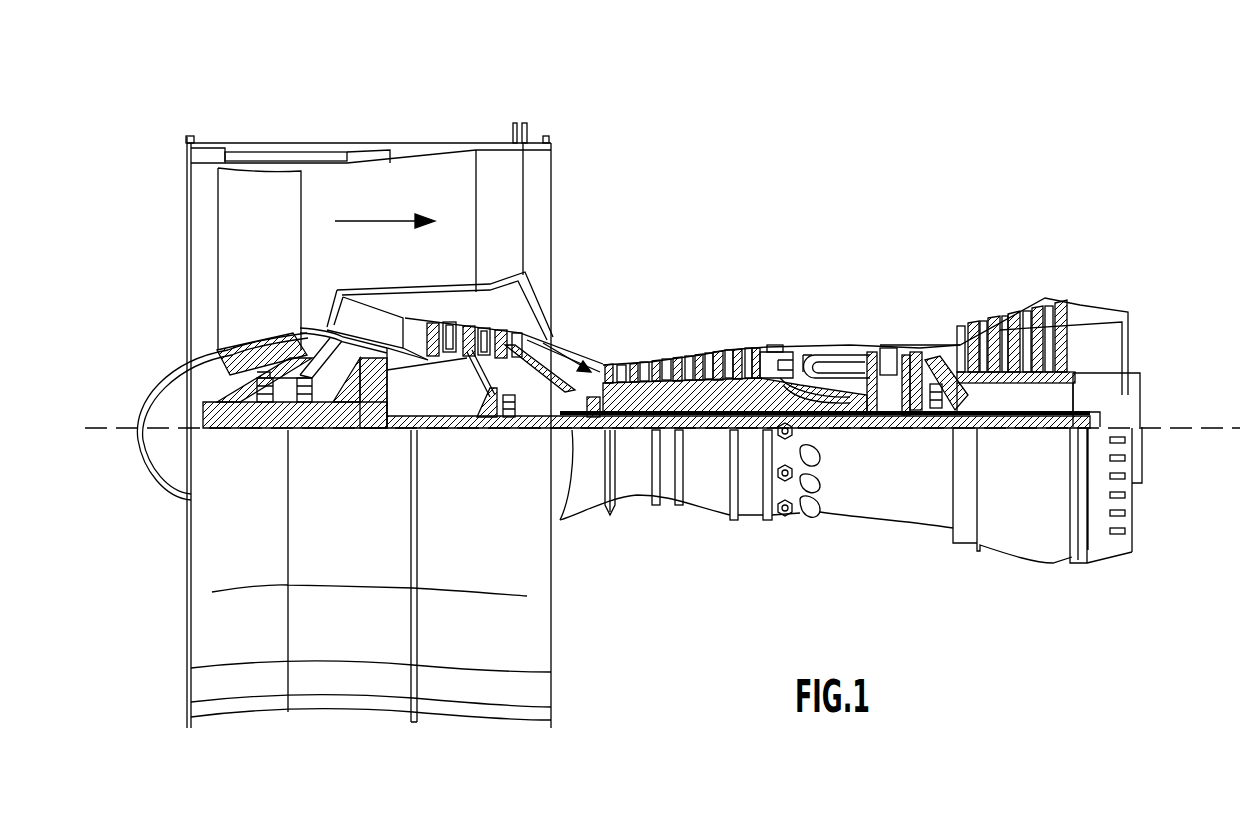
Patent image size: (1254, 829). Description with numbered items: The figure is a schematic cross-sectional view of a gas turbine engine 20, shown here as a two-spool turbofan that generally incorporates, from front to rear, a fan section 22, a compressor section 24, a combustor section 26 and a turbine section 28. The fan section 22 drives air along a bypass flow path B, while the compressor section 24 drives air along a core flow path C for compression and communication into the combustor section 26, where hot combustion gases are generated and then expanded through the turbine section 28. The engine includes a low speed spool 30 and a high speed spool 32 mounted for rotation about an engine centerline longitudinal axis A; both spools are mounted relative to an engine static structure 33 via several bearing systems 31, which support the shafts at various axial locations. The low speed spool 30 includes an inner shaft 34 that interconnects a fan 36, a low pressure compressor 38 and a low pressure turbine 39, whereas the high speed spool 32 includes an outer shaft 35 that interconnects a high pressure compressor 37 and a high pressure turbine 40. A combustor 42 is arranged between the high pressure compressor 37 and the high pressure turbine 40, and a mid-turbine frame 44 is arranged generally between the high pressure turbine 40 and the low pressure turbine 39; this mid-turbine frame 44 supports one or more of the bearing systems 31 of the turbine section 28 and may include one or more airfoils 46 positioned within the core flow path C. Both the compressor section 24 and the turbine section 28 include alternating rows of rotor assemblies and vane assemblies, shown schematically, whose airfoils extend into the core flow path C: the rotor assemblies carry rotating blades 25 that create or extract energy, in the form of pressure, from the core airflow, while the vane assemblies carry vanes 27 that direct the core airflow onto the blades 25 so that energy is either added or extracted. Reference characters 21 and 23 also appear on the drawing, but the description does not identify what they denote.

The gas turbine engine 20 is at (832, 192).
The rotor blades 21 is at (432, 326).
The fan section 22 is at (297, 130).
The vanes 23 is at (487, 326).
The compressor section 24 is at (605, 330).
The rotating blades 25 is at (490, 386).
The combustor section 26 is at (822, 324).
The vanes 27 is at (518, 336).
The turbine section 28 is at (970, 286).
The low speed spool 30 is at (709, 440).
The bearing systems 31 is at (274, 395).
The high speed spool 32 is at (754, 380).
The engine static structure 33 is at (750, 522).
The inner shaft 34 is at (572, 506).
The outer shaft 35 is at (833, 432).
The fan 36 is at (273, 272).
The high pressure compressor 37 is at (684, 398).
The low pressure compressor 38 is at (527, 287).
The low pressure turbine 39 is at (1012, 320).
The high pressure turbine 40 is at (889, 347).
The combustor 42 is at (824, 368).
The mid-turbine frame 44 is at (936, 334).
The airfoils 46 is at (943, 388).